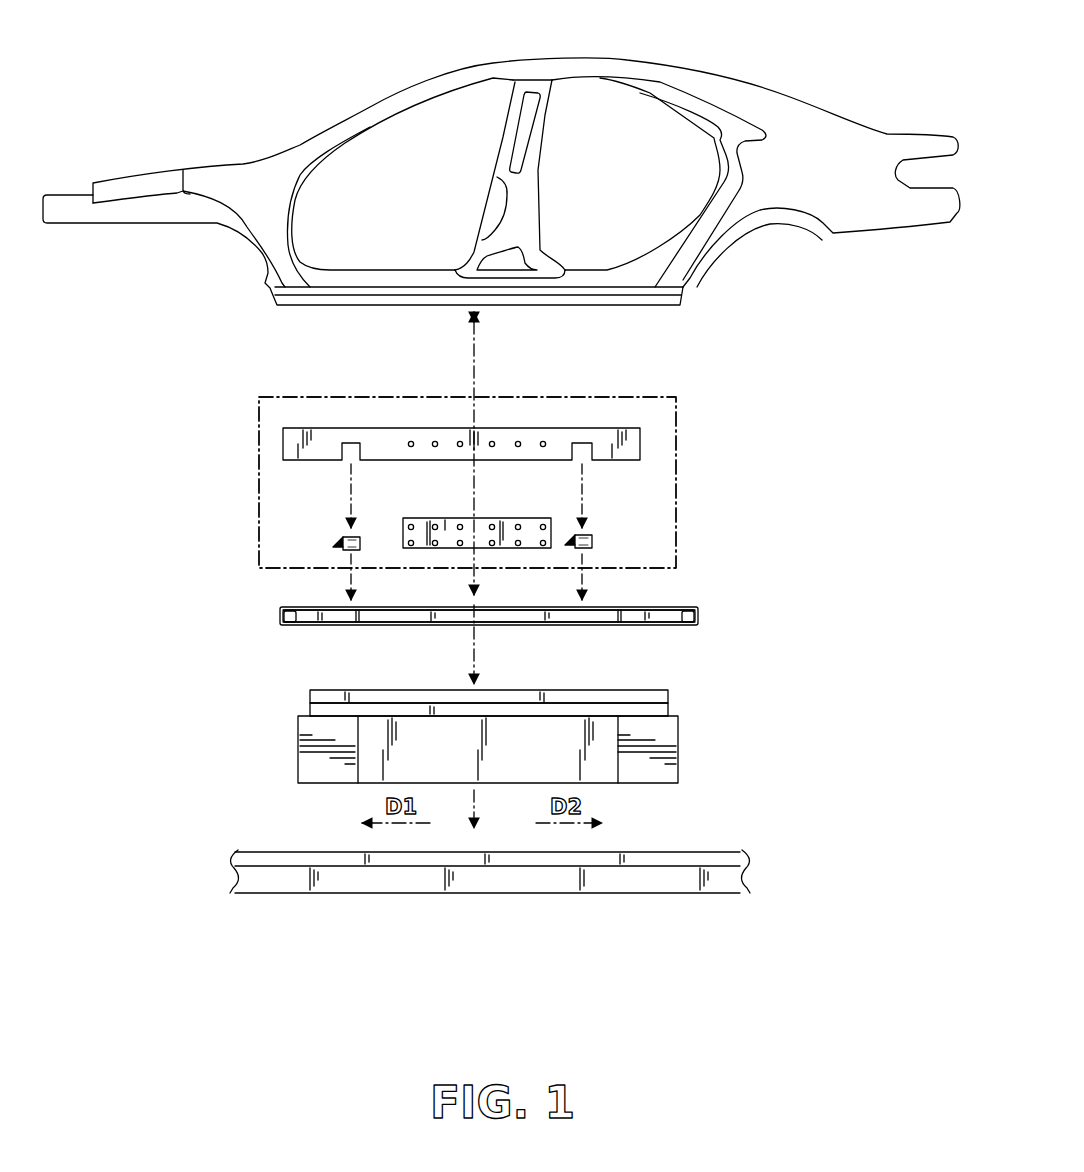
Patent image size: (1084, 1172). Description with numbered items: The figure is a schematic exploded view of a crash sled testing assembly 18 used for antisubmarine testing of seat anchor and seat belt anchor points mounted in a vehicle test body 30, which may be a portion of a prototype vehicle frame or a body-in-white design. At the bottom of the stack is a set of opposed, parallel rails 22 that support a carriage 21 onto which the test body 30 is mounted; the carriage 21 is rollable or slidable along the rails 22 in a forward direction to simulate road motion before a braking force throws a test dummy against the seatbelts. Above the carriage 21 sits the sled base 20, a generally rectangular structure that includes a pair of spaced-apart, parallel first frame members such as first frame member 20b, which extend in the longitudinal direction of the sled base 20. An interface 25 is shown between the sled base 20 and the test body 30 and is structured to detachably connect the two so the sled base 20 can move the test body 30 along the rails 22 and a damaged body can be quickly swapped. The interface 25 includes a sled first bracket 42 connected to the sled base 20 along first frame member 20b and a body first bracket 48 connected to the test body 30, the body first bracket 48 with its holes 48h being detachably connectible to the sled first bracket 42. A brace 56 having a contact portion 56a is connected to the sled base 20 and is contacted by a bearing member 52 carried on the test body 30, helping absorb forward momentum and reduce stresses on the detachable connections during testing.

The vehicle test body 30 is at (316, 130).
The interface 25 is at (254, 444).
The crash sled testing assembly 18 is at (778, 453).
The body first bracket 48 is at (328, 426).
The plate holes 48h is at (524, 441).
The sled first bracket 42 is at (450, 530).
The bearing member 52 is at (369, 544).
The brace 56 is at (598, 546).
The nut threads 56a is at (598, 540).
The sled base 20 is at (275, 615).
The first frame member 20b is at (386, 628).
The carriage 21 is at (295, 745).
The rails 22 is at (284, 898).